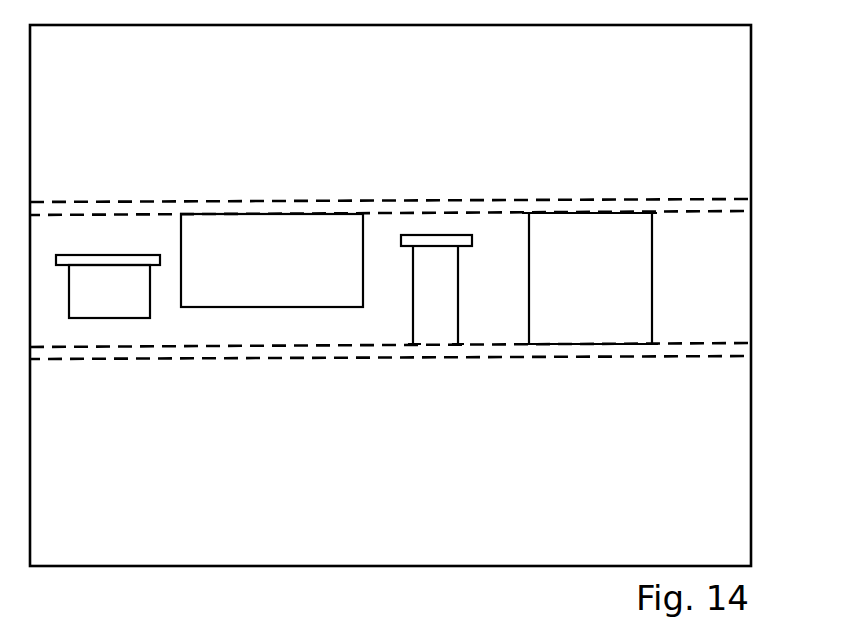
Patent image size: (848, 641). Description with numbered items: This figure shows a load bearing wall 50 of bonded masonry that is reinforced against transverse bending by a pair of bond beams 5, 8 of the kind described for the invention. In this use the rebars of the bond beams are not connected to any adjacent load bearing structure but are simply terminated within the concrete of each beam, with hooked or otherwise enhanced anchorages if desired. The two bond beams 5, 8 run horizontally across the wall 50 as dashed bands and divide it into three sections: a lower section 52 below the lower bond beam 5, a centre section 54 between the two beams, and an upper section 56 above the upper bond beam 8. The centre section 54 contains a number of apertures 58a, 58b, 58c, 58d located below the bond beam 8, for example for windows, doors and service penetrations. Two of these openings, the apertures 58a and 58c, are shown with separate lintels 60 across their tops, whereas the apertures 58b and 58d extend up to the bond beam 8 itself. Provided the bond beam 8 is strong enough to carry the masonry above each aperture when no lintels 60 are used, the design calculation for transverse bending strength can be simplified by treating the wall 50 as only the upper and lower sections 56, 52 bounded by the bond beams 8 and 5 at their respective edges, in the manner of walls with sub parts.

The load bearing wall 50 is at (716, 99).
The upper wall section 56 is at (724, 152).
The upper bond beam 8 is at (740, 203).
The centre wall section 54 is at (728, 290).
The lower bond beam 5 is at (741, 351).
The lower wall section 52 is at (733, 470).
The aperture 58a is at (109, 291).
The aperture 58b is at (272, 260).
The aperture 58c is at (427, 332).
The aperture 58d is at (589, 278).
The lintel 60 is at (120, 262).